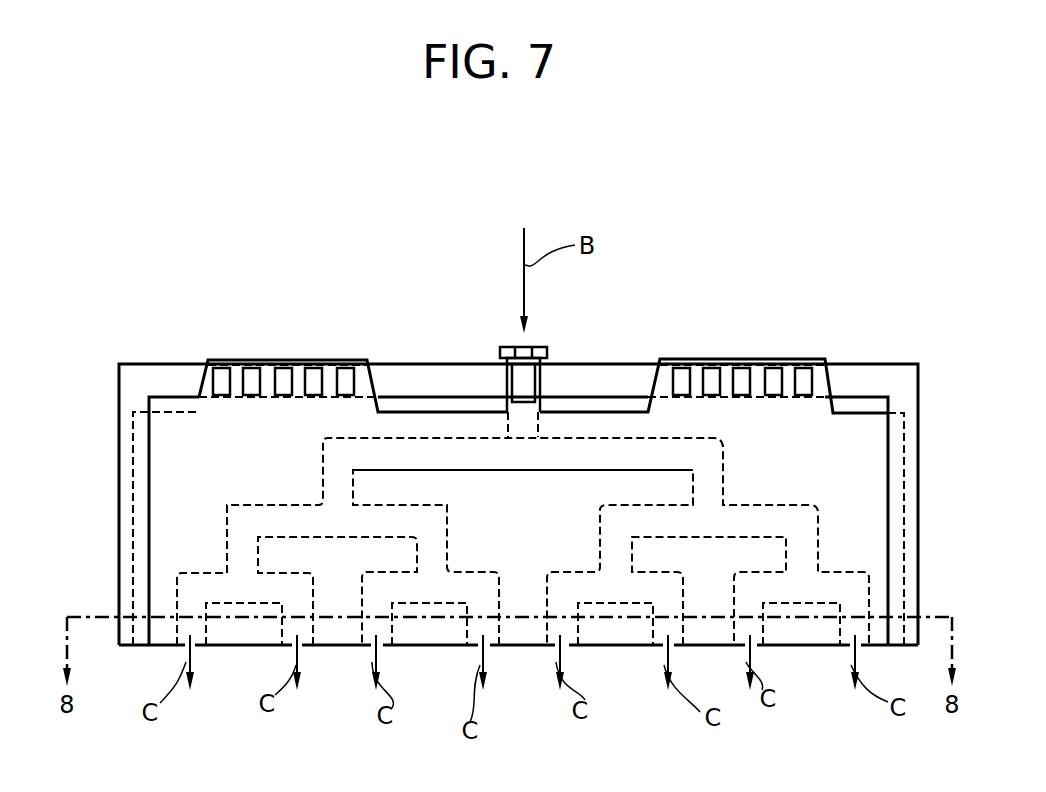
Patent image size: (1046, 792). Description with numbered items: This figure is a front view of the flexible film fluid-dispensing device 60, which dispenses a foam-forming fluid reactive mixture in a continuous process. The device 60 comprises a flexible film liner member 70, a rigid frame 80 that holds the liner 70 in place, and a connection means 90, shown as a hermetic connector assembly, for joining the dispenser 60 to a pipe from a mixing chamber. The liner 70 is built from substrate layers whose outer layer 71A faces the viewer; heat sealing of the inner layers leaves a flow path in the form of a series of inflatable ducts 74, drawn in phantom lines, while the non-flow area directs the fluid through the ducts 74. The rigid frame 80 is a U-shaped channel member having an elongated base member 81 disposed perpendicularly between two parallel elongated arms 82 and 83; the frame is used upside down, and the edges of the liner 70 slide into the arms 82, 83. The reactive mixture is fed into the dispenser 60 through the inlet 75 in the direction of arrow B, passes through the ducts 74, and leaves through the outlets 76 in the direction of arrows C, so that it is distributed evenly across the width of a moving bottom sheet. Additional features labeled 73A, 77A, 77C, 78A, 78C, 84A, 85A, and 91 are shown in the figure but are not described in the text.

The flexible film fluid-dispensing device 60 is at (550, 203).
The flexible film liner member 70 is at (158, 443).
The outer layer 71A is at (212, 462).
The wiring region 73A is at (566, 515).
The inflatable ducts 74 is at (255, 525).
The inlet 75 is at (500, 352).
The outlets 76 is at (292, 637).
The first electronic component 77A is at (232, 377).
The third electronic component 77C is at (340, 383).
The first electronic component of second group 78A is at (758, 382).
The third electronic component of second group 78C is at (683, 382).
The rigid frame 80 is at (621, 348).
The elongated base member 81 is at (136, 378).
The elongated arm 82 is at (133, 462).
The elongated arm 83 is at (905, 450).
The first component terminal 84A is at (308, 377).
The second component terminal 85A is at (803, 382).
The connection means 90 is at (491, 297).
The connector pin 91 is at (535, 347).